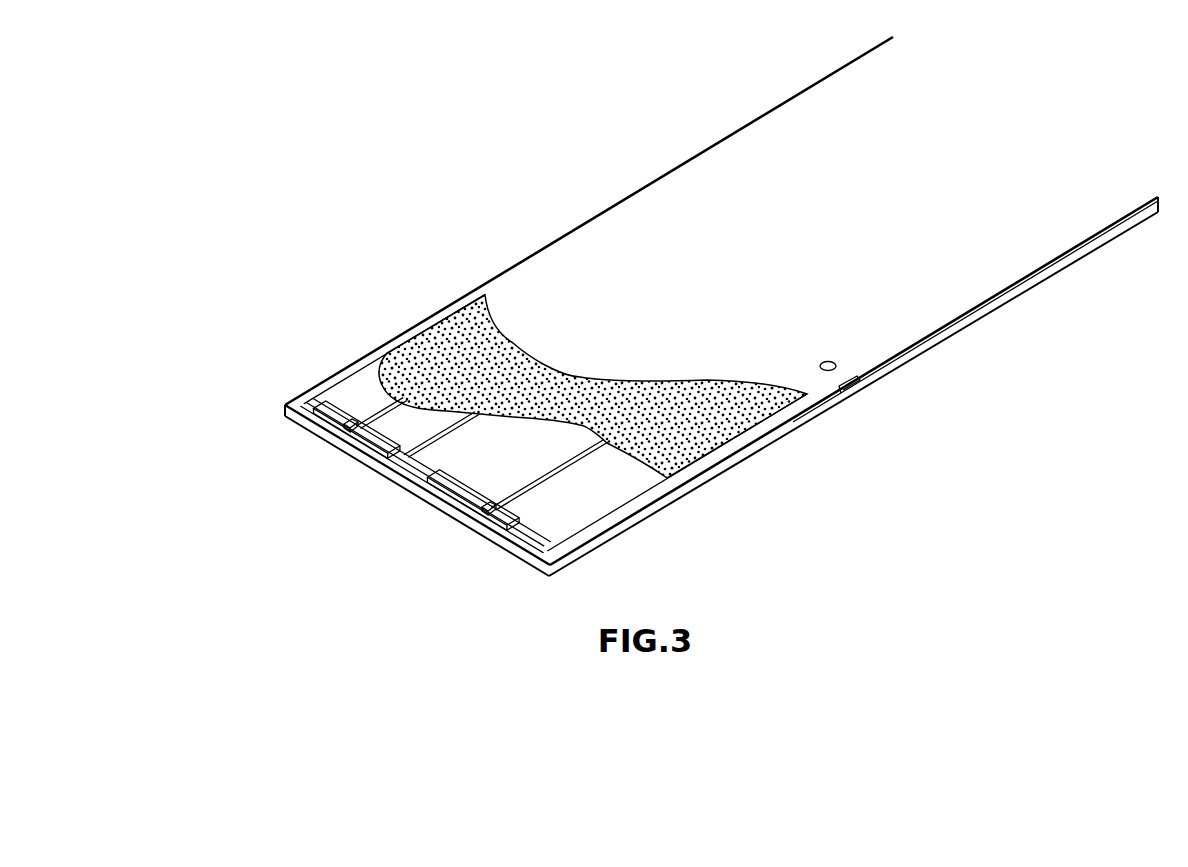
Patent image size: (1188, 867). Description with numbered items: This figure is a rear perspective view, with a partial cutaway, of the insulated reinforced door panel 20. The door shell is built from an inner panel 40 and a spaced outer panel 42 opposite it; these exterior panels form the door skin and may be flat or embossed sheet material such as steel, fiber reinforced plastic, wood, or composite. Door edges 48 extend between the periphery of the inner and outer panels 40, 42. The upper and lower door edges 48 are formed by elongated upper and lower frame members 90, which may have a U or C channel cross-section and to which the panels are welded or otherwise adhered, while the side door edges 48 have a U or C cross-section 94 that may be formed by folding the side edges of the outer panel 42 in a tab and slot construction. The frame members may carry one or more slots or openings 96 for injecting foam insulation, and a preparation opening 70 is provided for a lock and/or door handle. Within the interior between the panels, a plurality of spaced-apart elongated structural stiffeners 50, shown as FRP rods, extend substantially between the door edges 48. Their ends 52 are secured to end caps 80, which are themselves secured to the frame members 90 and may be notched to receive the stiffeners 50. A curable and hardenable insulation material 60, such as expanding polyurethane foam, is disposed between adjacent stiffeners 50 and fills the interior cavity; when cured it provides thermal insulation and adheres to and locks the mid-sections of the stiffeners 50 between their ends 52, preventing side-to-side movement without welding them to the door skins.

The insulated reinforced door panel 20 is at (452, 82).
The inner panel 40 is at (706, 166).
The outer panel 42 is at (905, 366).
The door edges 48 is at (590, 219).
The structural stiffeners 50 is at (420, 434).
The ends 52 is at (350, 427).
The insulation material 60 is at (431, 340).
The preparation opening 70 is at (832, 360).
The end caps 80 is at (361, 443).
The frame members 90 is at (968, 76).
The U or C cross-section 94 is at (364, 356).
The slots or openings 96 is at (420, 500).